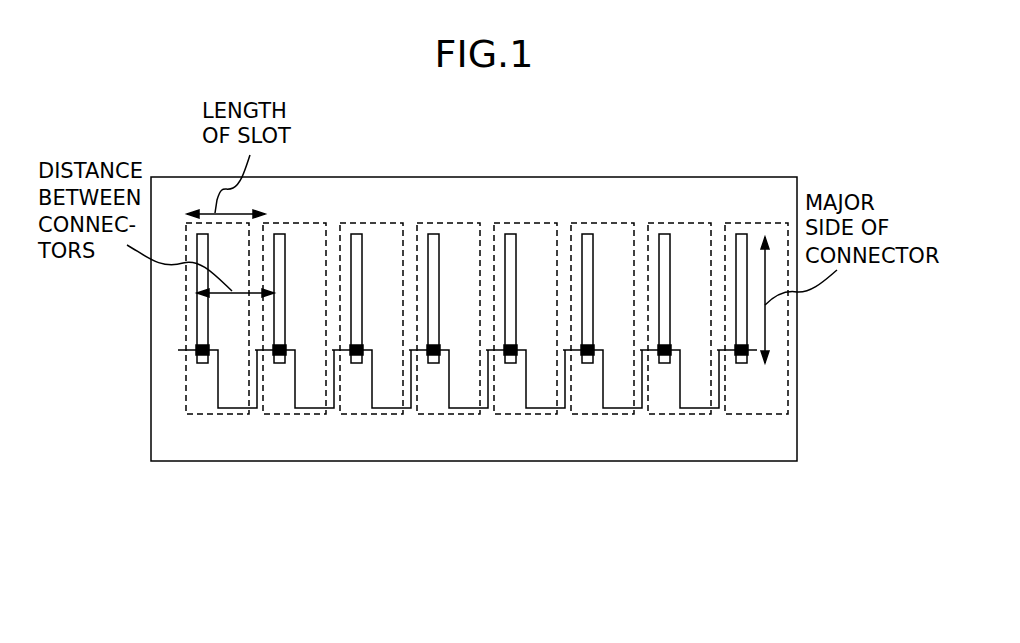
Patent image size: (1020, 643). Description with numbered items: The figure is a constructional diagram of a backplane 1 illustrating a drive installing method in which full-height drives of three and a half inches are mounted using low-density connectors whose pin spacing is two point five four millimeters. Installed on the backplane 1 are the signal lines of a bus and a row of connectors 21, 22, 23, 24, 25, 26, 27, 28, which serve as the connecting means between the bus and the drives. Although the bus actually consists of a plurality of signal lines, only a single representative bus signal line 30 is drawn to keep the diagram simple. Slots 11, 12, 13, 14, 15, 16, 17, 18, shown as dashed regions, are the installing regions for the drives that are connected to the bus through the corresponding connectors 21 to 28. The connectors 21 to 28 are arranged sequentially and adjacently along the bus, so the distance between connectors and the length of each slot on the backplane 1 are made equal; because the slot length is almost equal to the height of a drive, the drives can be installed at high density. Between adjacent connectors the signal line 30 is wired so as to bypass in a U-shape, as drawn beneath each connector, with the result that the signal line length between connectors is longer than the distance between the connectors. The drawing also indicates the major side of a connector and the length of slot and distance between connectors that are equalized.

The backplane 1 is at (797, 400).
The slot 11 is at (203, 414).
The slot 12 is at (280, 414).
The slot 13 is at (357, 414).
The slot 14 is at (434, 414).
The slot 15 is at (511, 414).
The slot 16 is at (588, 414).
The slot 17 is at (665, 414).
The slot 18 is at (742, 414).
The connector 21 is at (201, 306).
The connector 22 is at (277, 236).
The connector 23 is at (354, 236).
The connector 24 is at (431, 236).
The connector 25 is at (508, 236).
The connector 26 is at (585, 236).
The connector 27 is at (662, 236).
The connector 28 is at (739, 236).
The bus signal line 30 is at (742, 352).